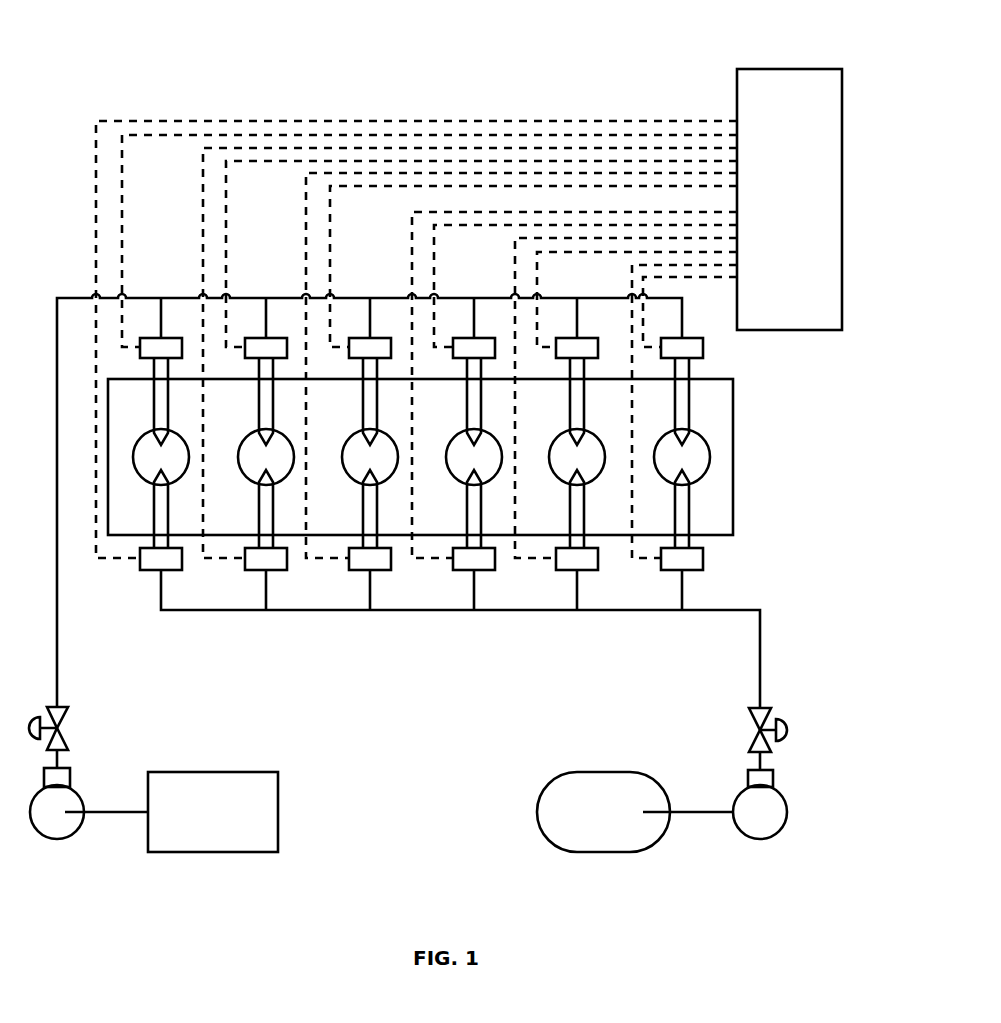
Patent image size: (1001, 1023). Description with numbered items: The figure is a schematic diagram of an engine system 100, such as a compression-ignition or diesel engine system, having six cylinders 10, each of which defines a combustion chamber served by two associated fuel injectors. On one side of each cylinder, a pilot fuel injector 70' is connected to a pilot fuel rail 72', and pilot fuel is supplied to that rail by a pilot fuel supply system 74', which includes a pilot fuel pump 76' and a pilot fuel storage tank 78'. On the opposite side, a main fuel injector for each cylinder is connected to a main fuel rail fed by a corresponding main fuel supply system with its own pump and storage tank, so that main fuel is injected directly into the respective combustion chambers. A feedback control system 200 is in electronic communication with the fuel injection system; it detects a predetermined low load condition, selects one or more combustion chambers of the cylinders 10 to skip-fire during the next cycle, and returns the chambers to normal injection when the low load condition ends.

The engine system 100 is at (170, 52).
The feedback control system 200 is at (469, 313).
The cylinders 10 is at (697, 456).
The pilot fuel injector 70' is at (472, 355).
The pilot fuel rail 72' is at (357, 476).
The pilot fuel supply system 74' is at (151, 799).
The pilot fuel pump 76' is at (84, 822).
The pilot fuel storage tank 78' is at (213, 838).